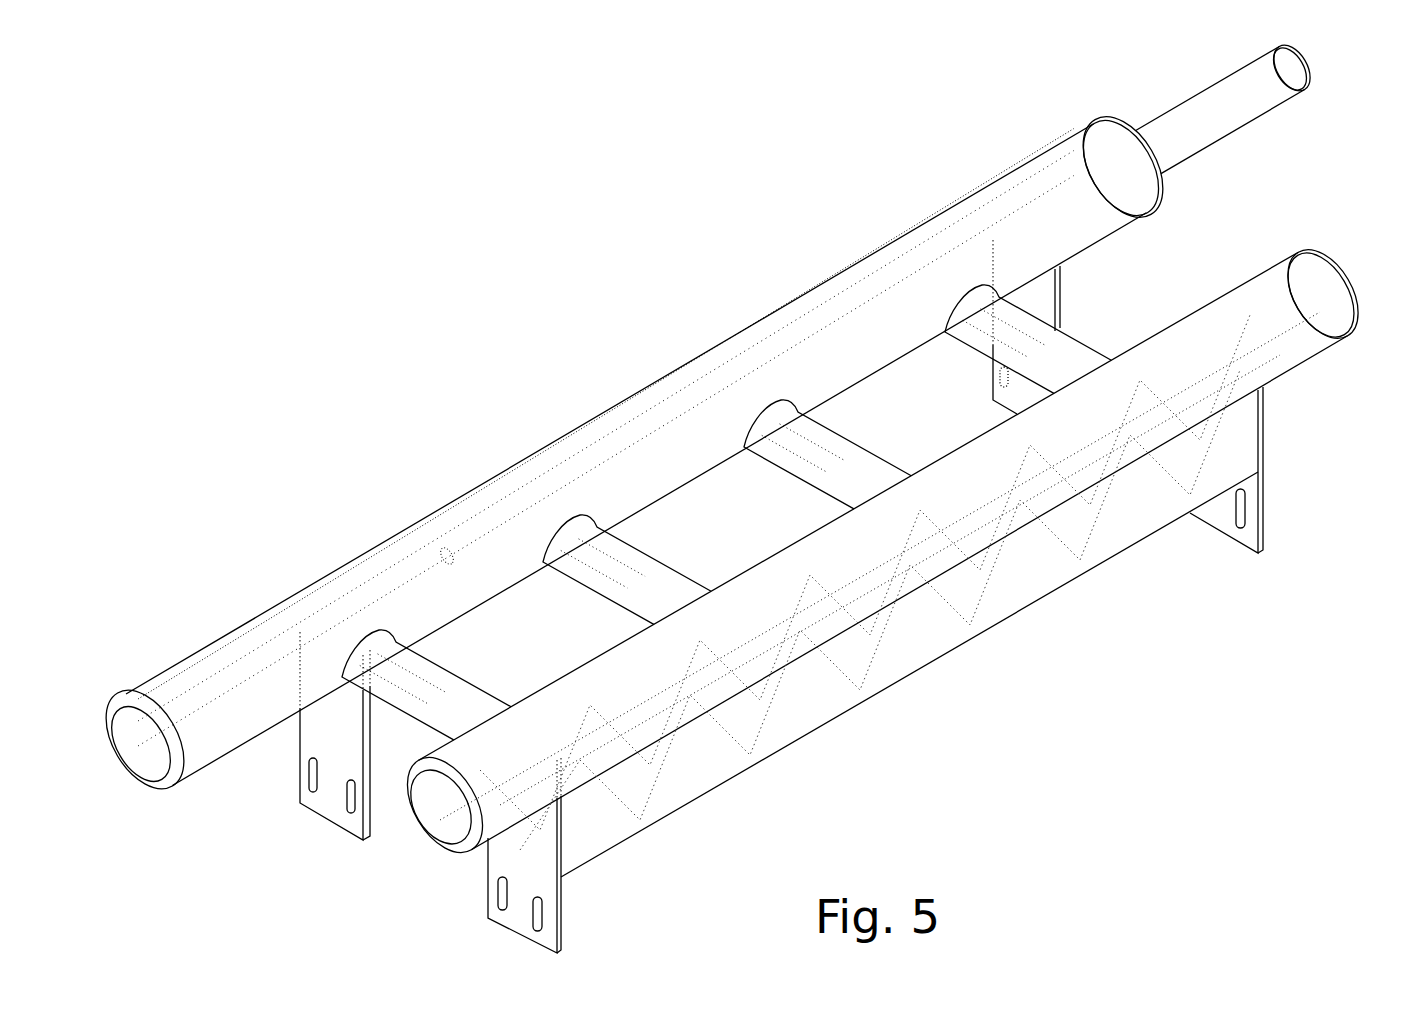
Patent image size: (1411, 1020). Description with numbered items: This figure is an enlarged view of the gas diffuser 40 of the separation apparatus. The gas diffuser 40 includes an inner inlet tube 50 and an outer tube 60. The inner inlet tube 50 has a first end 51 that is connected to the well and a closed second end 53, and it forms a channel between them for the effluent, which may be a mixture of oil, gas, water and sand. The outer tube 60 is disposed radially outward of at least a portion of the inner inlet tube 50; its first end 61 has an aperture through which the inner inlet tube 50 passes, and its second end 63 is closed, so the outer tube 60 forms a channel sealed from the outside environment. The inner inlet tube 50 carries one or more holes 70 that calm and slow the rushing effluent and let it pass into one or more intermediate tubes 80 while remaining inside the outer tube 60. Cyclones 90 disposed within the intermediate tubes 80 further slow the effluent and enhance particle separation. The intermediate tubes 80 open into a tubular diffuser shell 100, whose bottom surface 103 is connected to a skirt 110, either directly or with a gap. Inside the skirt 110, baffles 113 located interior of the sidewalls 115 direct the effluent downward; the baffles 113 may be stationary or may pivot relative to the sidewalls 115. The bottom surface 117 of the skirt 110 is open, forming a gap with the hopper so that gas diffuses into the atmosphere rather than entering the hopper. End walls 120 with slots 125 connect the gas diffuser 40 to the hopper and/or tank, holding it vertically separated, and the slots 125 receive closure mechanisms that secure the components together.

The gas diffuser 40 is at (688, 214).
The inner inlet tube 50 is at (1223, 92).
The first end 51 is at (1296, 56).
The second end 53 is at (137, 778).
The outer tube 60 is at (1027, 163).
The first end 61 is at (1123, 117).
The second end 63 is at (108, 712).
The holes 70 is at (445, 548).
The intermediate tubes 80 is at (425, 718).
The cyclones 90 is at (1095, 347).
The diffuser shell 100 is at (1270, 368).
The bottom surface 103 is at (503, 833).
The skirt 110 is at (1135, 520).
The baffles 113 is at (812, 677).
The sidewalls 115 is at (1083, 543).
The bottom surface 117 is at (650, 818).
The end walls 120 is at (327, 796).
The slots 125 is at (300, 790).